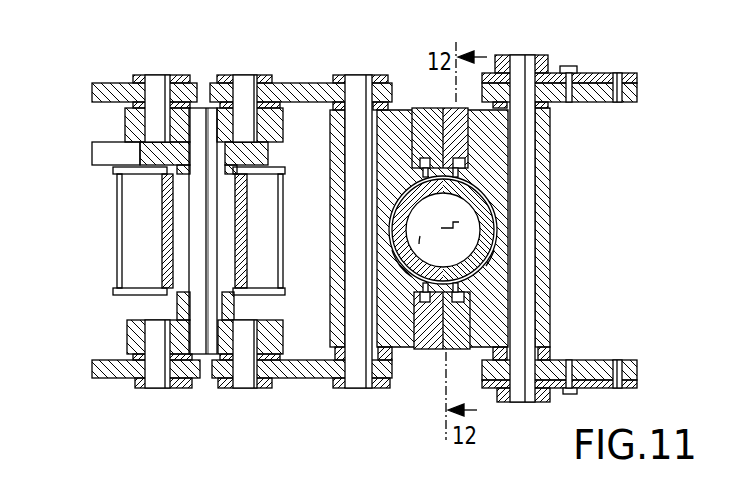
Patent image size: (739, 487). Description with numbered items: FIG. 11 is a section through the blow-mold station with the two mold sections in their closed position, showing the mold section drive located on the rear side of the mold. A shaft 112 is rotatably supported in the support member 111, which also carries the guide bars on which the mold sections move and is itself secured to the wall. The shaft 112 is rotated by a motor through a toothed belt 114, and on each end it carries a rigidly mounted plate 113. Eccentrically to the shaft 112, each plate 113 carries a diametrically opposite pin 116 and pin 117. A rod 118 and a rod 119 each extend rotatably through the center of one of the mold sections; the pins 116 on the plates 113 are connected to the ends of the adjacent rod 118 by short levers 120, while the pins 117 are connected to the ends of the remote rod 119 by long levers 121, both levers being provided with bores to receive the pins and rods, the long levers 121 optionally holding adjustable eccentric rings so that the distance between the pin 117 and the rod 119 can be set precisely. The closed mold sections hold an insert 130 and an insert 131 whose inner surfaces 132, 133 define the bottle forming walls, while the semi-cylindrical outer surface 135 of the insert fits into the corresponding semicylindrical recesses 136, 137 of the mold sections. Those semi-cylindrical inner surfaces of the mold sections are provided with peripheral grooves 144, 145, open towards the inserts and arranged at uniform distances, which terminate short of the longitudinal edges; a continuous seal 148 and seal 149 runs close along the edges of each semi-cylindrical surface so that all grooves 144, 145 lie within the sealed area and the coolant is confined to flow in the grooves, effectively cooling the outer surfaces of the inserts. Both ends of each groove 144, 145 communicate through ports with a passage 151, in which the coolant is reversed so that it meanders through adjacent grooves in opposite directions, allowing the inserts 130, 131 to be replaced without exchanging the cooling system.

The support member 111 is at (148, 172).
The shaft 112 is at (200, 268).
The plate 113 is at (137, 123).
The toothed belt 114 is at (100, 155).
The pin 116 is at (165, 93).
The pin 117 is at (260, 88).
The rod 118 is at (360, 160).
The rod 119 is at (520, 222).
The short lever 120 is at (317, 85).
The long lever 121 is at (97, 97).
The insert 130 is at (402, 222).
The insert 131 is at (498, 212).
The inner surface 132 is at (479, 222).
The inner surface 133 is at (408, 240).
The outer surface 135 is at (400, 276).
The semicylindrical recess 136 is at (548, 272).
The semicylindrical recess 137 is at (396, 268).
The groove 144 is at (482, 258).
The groove 145 is at (388, 262).
The seal 148 is at (435, 320).
The seal 149 is at (444, 322).
The passage 151 is at (466, 160).